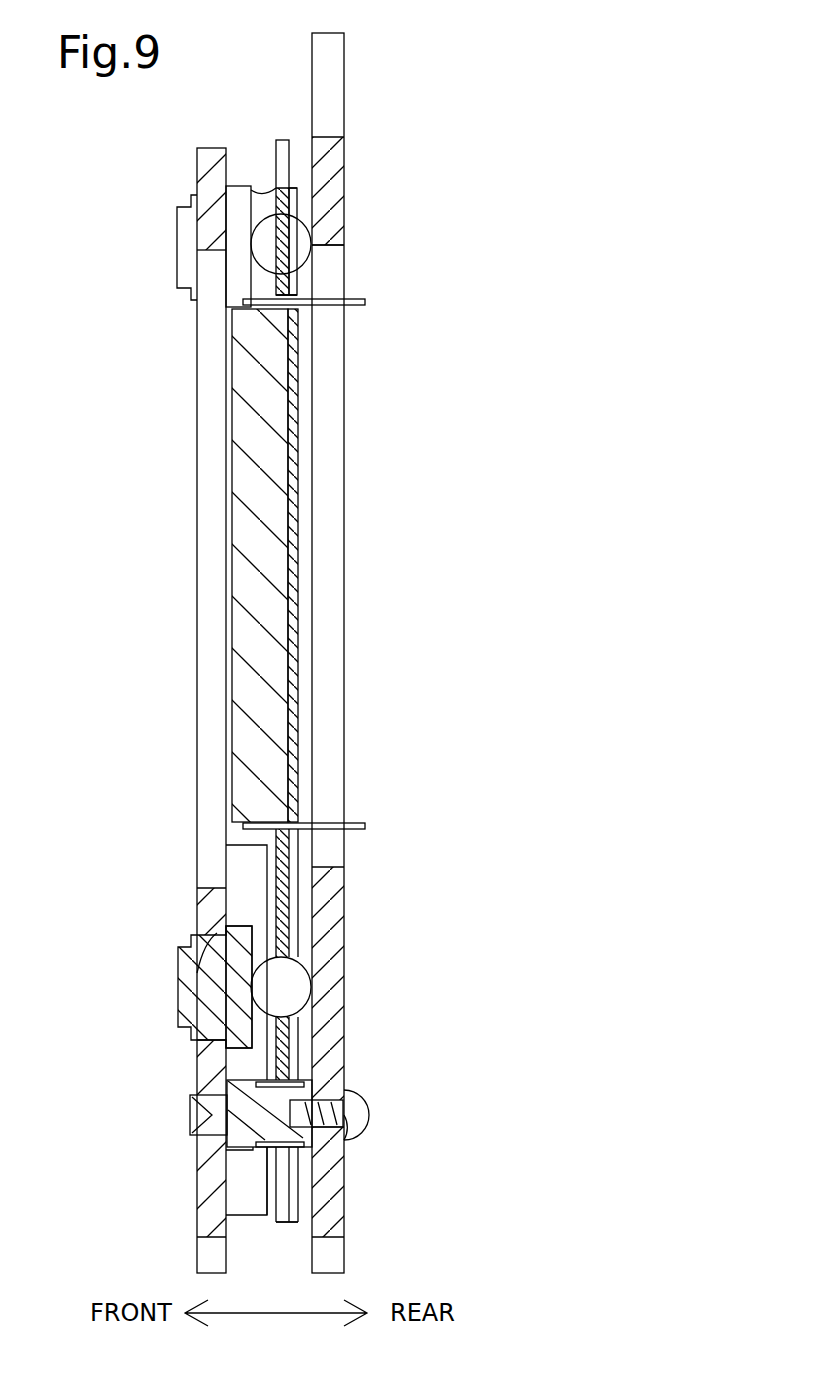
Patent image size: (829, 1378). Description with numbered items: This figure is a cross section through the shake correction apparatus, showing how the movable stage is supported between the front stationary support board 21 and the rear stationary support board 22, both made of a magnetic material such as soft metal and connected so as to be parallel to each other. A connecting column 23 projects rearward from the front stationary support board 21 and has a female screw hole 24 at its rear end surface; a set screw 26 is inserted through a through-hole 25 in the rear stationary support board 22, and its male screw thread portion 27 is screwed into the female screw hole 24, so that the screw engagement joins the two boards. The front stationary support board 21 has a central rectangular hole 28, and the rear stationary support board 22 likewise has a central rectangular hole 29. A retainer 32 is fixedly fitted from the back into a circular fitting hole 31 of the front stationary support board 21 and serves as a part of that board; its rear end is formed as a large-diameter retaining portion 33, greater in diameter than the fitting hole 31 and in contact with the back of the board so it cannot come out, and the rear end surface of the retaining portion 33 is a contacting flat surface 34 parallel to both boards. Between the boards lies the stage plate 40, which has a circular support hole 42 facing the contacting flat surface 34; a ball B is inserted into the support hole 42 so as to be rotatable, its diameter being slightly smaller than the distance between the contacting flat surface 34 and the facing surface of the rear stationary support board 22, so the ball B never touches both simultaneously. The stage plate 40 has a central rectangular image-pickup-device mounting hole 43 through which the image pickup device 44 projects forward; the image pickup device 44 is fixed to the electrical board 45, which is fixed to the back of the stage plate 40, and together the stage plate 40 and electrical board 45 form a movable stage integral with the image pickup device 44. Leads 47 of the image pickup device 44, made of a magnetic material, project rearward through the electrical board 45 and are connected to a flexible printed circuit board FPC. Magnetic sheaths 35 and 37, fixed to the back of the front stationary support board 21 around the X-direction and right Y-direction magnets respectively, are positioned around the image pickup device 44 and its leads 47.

The front stationary support board 21 is at (208, 1217).
The rear stationary support board 22 is at (338, 1222).
The connecting column 23 is at (218, 1123).
The female screw hole 24 is at (345, 1105).
The through-hole 25 is at (345, 1087).
The set screw 26 is at (350, 1128).
The male screw thread portion 27 is at (340, 1155).
The rectangular hole 28 is at (212, 253).
The rectangular hole 29 is at (332, 243).
The fitting hole 31 is at (197, 972).
The retainer 32 is at (187, 243).
The large-diameter retaining portion 33 is at (238, 197).
The contacting flat surface 34 is at (287, 187).
The magnetic sheath 35 is at (237, 835).
The magnetic sheath 37 is at (242, 1203).
The stage plate 40 is at (287, 140).
The support hole 42 is at (290, 960).
The image-pickup-device mounting hole 43 is at (285, 312).
The image pickup device 44 is at (258, 532).
The electrical board 45 is at (298, 505).
The lead 47 is at (365, 299).
The ball B is at (308, 228).
The flexible printed circuit board FPC is at (292, 1223).